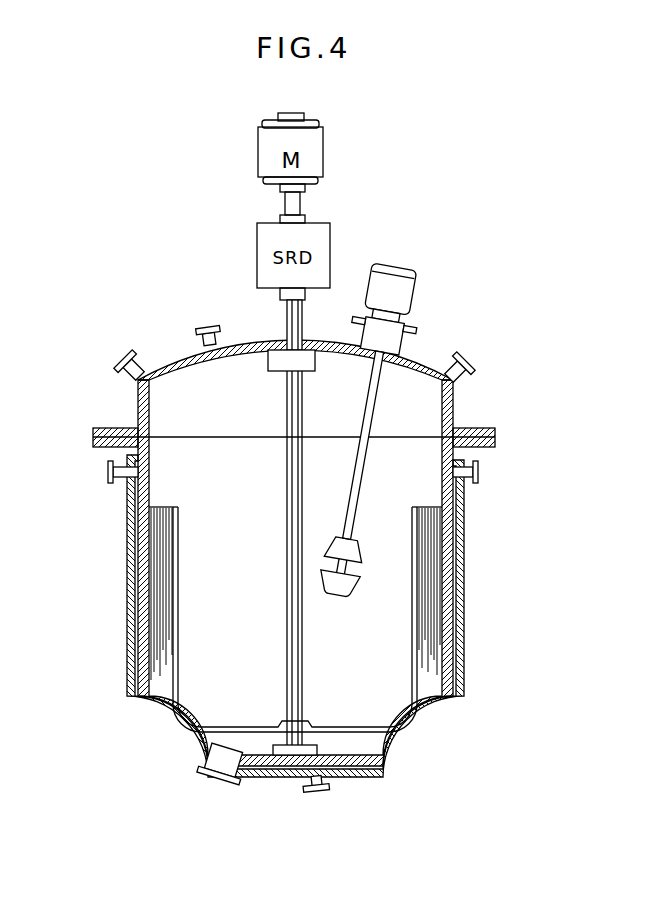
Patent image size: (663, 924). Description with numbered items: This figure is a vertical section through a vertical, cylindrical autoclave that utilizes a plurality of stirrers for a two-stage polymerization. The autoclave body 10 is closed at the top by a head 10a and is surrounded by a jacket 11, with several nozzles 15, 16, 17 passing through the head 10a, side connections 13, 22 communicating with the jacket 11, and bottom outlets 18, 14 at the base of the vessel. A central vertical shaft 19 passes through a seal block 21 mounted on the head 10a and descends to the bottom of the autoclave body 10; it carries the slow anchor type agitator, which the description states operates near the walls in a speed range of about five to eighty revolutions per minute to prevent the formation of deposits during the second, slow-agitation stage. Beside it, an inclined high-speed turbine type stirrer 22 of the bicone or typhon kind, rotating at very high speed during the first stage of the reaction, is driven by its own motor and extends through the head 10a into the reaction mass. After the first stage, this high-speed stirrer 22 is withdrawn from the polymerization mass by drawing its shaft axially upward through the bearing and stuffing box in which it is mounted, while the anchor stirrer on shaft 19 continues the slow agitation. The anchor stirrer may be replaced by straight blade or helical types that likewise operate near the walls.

The vessel 10 is at (172, 487).
The vessel head 10a is at (428, 362).
The jacket 11 is at (463, 584).
The jacket inlet nozzle 13 is at (122, 480).
The bottom outlet nozzle 14 is at (323, 789).
The top nozzle 15 is at (130, 368).
The top nozzle 16 is at (202, 341).
The top nozzle 17 is at (455, 383).
The bottom drain nozzle 18 is at (208, 767).
The agitator shaft 19 is at (287, 526).
The shaft seal block 21 is at (272, 352).
The stirrer 22 is at (468, 483).